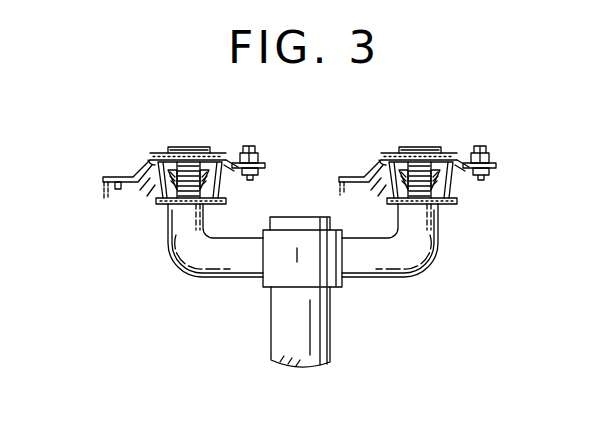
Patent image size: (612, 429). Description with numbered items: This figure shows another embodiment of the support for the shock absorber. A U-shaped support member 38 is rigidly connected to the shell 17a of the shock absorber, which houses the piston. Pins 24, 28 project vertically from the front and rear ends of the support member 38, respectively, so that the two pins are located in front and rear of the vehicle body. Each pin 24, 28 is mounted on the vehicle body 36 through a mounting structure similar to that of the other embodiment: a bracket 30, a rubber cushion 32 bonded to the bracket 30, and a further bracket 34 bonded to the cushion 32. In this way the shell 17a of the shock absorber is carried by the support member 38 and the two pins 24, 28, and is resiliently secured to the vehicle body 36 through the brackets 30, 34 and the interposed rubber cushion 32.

The shell 17a is at (276, 318).
The U-shaped support member 38 is at (412, 243).
The pin 24 is at (165, 160).
The pin 28 is at (394, 162).
The bracket 30 is at (204, 160).
The rubber cushion 32 is at (224, 186).
The bracket 34 is at (233, 163).
The vehicle body 36 is at (140, 176).